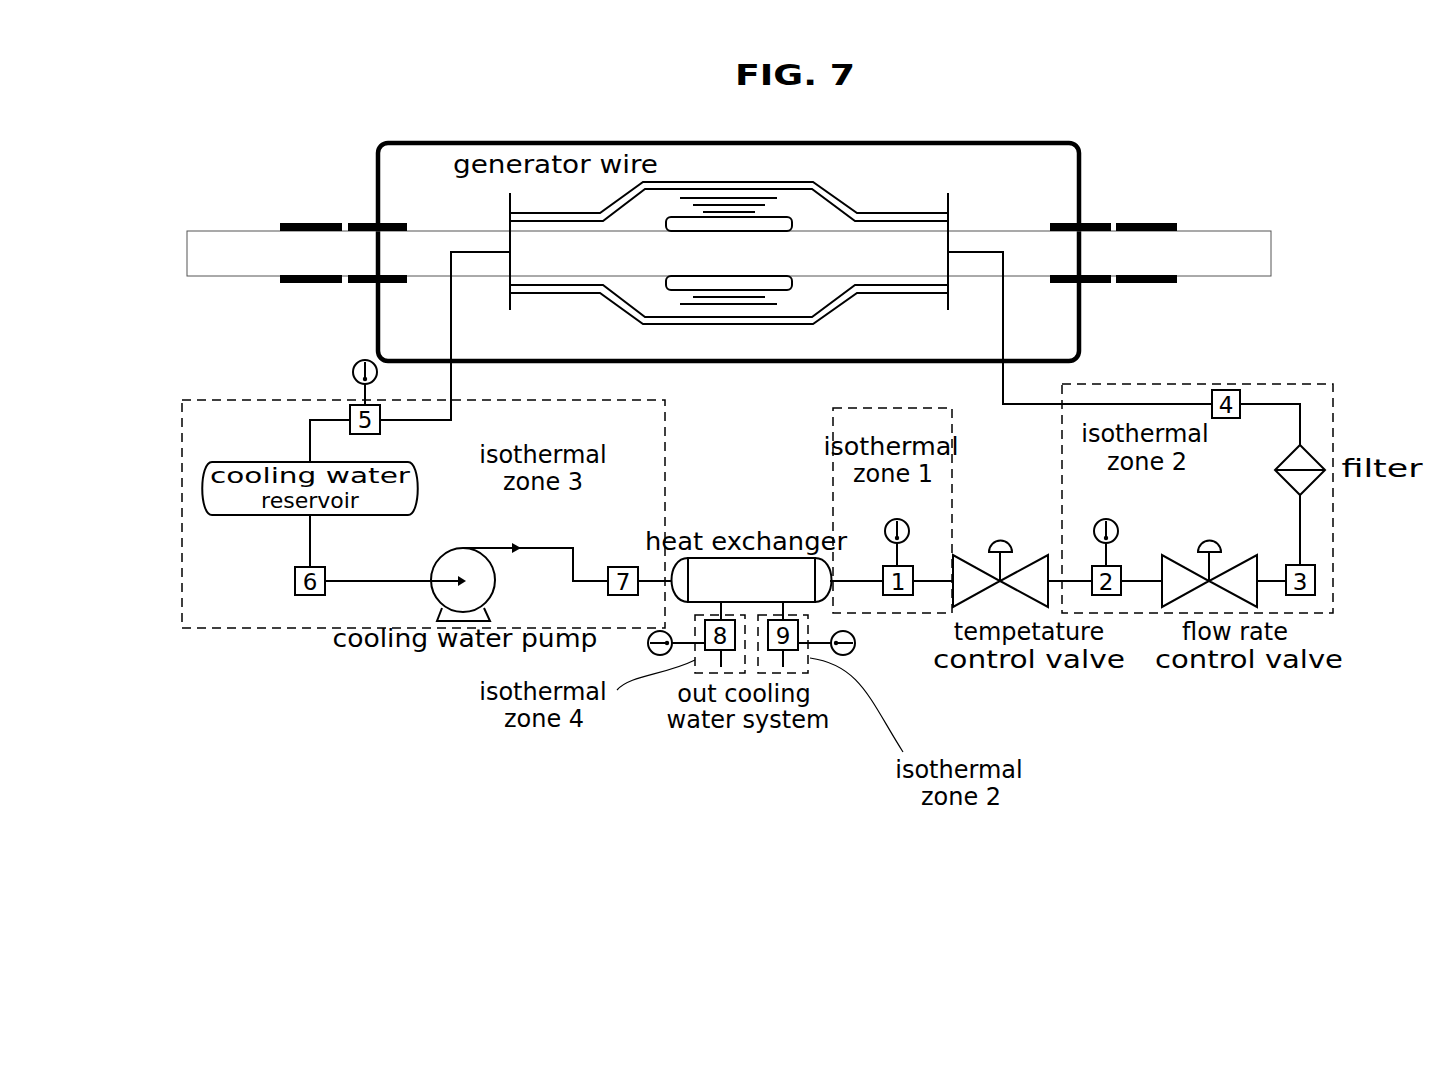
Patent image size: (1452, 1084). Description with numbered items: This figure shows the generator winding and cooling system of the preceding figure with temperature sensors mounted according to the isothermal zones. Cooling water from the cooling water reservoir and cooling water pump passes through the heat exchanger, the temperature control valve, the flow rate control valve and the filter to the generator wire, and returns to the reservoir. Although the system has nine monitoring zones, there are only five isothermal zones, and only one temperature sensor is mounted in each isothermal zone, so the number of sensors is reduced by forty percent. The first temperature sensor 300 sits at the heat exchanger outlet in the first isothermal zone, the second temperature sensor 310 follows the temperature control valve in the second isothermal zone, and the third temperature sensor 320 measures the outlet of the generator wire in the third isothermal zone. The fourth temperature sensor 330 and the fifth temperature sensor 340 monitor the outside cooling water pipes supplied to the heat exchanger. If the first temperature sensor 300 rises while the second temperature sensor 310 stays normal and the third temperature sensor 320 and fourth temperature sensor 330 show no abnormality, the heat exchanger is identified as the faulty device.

The temperature sensor T3 320 is at (353, 375).
The temperature sensor T1 300 is at (912, 540).
The temperature sensor T2 310 is at (1117, 533).
The temperature sensor T4 330 is at (662, 657).
The temperature sensor T5 340 is at (842, 657).